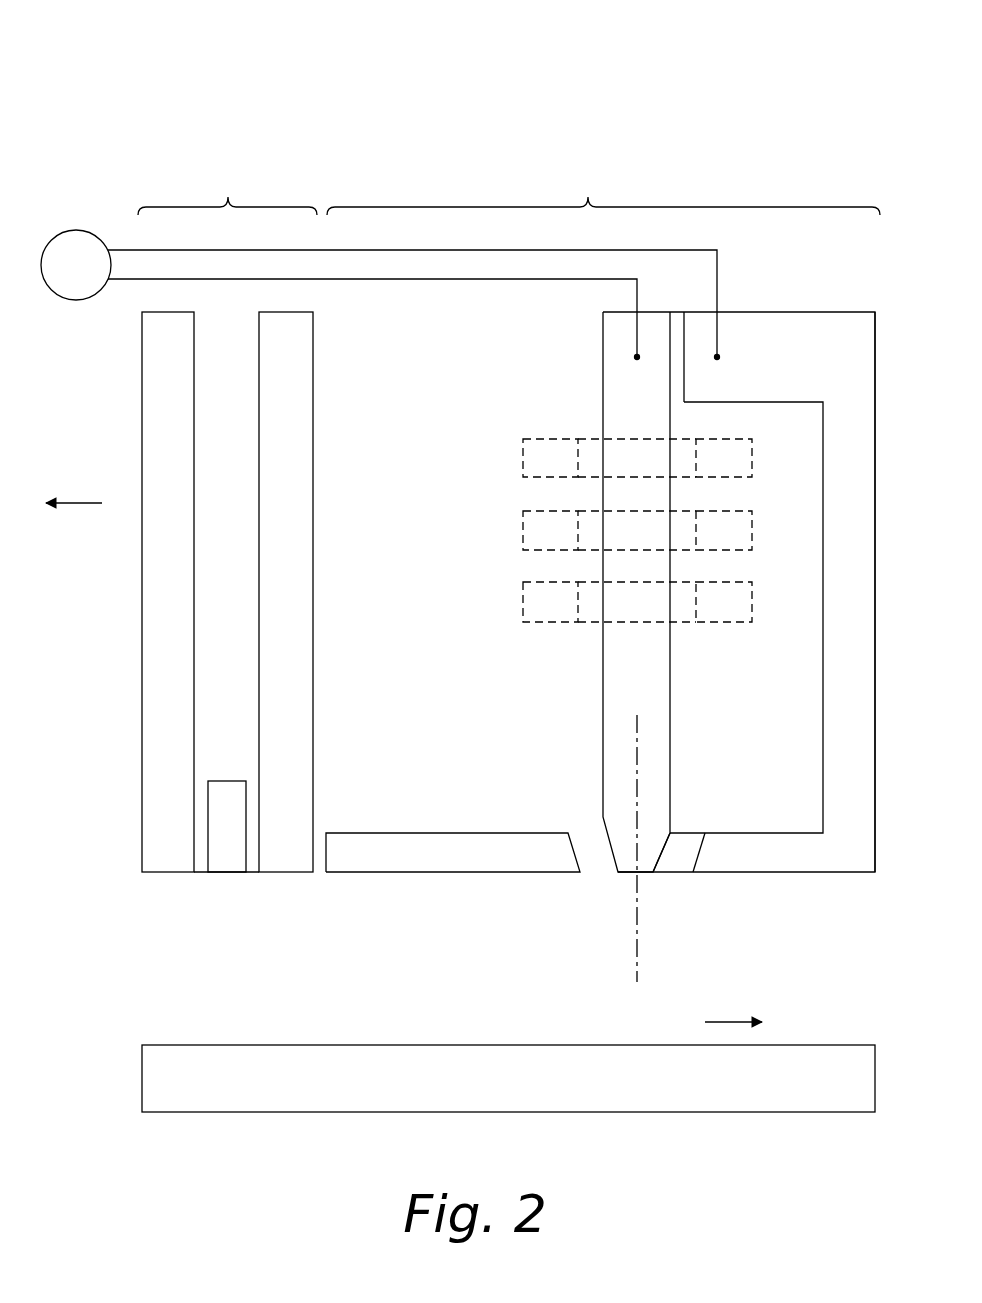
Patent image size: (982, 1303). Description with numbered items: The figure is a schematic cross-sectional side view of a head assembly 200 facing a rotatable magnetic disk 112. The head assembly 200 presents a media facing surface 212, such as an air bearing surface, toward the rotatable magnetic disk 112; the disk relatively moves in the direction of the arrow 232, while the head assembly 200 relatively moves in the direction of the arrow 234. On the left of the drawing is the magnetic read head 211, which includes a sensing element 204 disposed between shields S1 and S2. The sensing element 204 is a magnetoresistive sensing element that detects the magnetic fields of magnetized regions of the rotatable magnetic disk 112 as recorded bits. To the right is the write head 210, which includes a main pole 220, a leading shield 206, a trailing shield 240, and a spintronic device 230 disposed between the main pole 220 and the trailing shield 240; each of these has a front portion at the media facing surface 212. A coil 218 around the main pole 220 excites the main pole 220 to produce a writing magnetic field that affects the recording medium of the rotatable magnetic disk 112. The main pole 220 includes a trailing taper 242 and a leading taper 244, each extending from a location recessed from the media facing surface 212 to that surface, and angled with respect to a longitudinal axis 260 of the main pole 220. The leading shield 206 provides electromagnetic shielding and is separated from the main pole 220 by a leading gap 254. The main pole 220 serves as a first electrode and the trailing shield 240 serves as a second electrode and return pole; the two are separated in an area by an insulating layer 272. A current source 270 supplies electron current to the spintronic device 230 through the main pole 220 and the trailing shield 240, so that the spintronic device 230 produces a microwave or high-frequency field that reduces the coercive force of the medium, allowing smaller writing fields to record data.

The head assembly 200 is at (138, 53).
The current source 270 is at (75, 230).
The magnetic read head 211 is at (227, 517).
The write head 210 is at (603, 517).
The insulating layer 272 is at (678, 318).
The shield S1 is at (163, 872).
The shield S2 is at (288, 872).
The sensing element 204 is at (225, 872).
The leading shield 206 is at (380, 872).
The leading taper 244 is at (612, 848).
The main pole 220 is at (655, 676).
The media facing surface 212 is at (755, 872).
The spintronic device 230 is at (676, 858).
The trailing taper 242 is at (666, 818).
The trailing shield 240 is at (845, 872).
The leading gap 254 is at (597, 868).
The coil 218 is at (550, 622).
The longitudinal axis 260 is at (636, 967).
The arrow 232 is at (720, 1020).
The arrow 234 is at (84, 503).
The rotatable magnetic disk 112 is at (142, 1075).